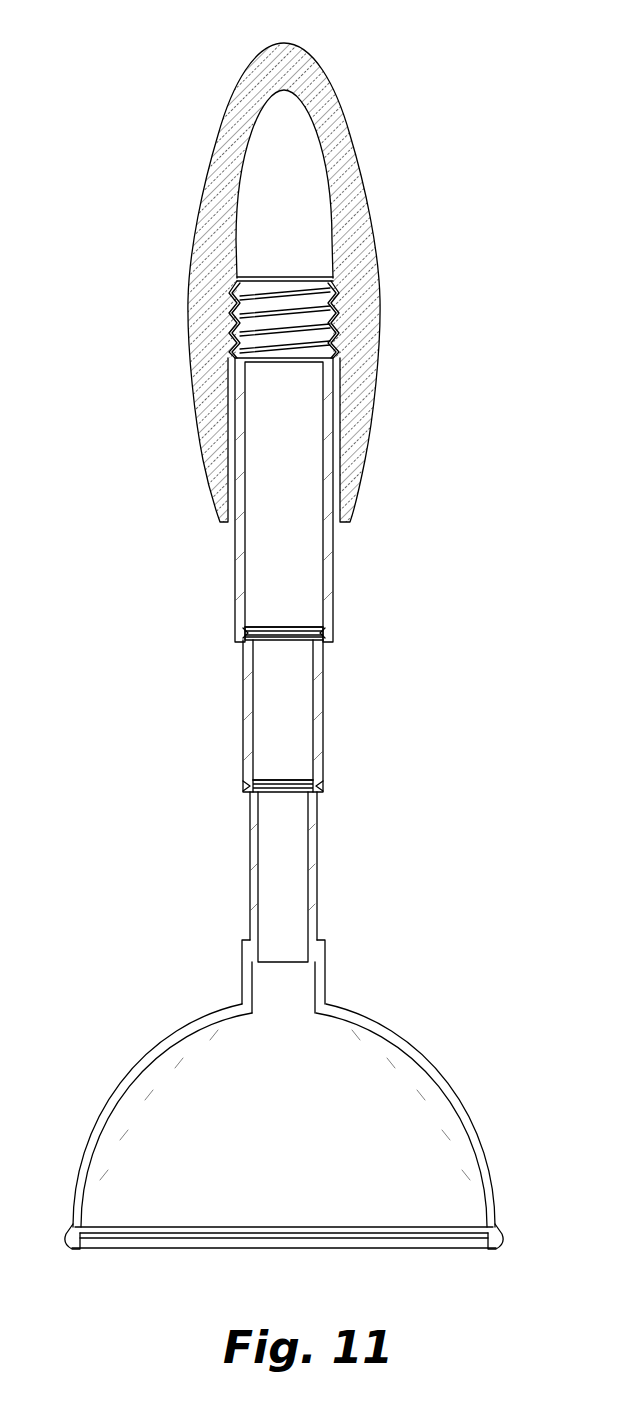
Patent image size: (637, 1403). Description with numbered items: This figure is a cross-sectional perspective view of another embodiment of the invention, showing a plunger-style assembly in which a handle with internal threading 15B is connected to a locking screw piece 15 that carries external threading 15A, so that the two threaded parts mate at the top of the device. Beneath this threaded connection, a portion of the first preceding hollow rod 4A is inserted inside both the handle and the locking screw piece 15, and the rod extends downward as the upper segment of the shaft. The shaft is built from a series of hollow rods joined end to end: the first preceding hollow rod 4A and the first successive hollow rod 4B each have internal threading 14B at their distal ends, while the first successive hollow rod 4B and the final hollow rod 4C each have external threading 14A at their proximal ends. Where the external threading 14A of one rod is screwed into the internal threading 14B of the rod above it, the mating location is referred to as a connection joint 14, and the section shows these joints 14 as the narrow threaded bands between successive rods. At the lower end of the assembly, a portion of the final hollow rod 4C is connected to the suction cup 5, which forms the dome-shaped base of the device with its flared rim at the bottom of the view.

The locking screw piece 15 is at (263, 275).
The external threading 15A is at (245, 311).
The internal threading 15B is at (338, 312).
The first preceding hollow rod 4A is at (334, 567).
The first successive hollow rod 4B is at (243, 658).
The final hollow rod 4C is at (318, 846).
The connection joints 14 is at (287, 627).
The external threading 14A is at (273, 780).
The internal threading 14B is at (325, 780).
The suction cup 5 is at (146, 1055).